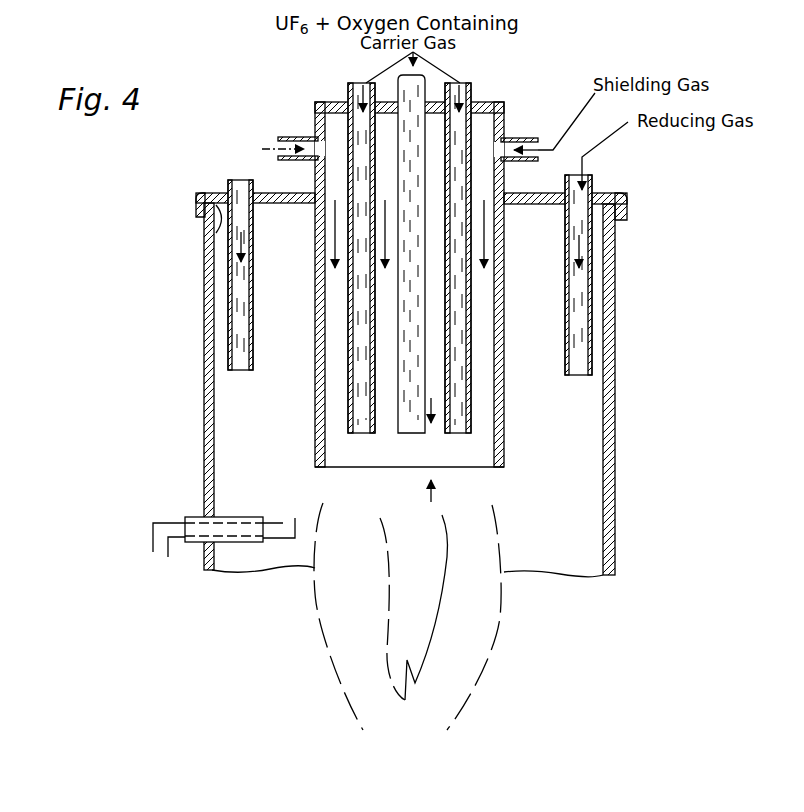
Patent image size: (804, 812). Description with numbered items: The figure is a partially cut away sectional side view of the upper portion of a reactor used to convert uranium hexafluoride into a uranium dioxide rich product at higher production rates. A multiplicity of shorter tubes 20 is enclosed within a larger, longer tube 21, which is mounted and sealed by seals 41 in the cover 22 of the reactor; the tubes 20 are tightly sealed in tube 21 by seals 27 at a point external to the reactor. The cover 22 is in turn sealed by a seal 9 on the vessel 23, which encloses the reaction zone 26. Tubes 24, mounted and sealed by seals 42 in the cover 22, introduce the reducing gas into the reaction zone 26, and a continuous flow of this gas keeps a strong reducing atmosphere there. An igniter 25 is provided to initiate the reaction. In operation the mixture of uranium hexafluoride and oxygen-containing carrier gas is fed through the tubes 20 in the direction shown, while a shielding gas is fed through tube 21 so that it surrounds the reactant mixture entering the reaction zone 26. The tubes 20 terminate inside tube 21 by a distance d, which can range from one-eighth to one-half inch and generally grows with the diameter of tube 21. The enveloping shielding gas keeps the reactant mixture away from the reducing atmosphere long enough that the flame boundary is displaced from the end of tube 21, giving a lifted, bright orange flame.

The seal 9 is at (215, 233).
The tubes 20 is at (471, 185).
The tube 21 is at (315, 183).
The cover 22 is at (560, 206).
The vessel 23 is at (615, 340).
The tubes 24 is at (593, 178).
The igniter 25 is at (228, 515).
The reaction zone 26 is at (572, 488).
The seals 27 is at (347, 104).
The seals 41 is at (317, 213).
The seals 42 is at (227, 190).
The distance d is at (431, 471).